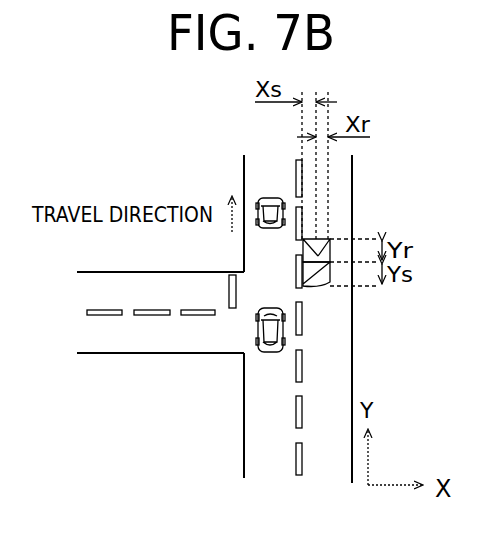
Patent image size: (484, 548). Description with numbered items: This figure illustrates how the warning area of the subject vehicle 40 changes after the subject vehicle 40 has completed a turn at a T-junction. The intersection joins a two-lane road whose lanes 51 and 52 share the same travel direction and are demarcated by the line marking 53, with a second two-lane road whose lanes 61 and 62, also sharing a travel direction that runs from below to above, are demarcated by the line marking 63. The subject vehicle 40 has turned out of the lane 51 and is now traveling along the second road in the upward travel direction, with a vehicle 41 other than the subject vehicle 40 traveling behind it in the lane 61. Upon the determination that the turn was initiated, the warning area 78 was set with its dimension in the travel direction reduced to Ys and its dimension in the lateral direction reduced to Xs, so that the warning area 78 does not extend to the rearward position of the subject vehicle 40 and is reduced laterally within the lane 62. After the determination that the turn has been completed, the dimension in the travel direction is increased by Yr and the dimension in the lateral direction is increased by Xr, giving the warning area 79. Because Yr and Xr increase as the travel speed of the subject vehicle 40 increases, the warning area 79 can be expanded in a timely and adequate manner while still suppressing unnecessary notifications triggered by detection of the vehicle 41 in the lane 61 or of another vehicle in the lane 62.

The subject vehicle 40 is at (259, 198).
The other vehicle 41 is at (267, 354).
The lane 51 is at (97, 287).
The lane 52 is at (88, 333).
The line marking 53 is at (95, 310).
The lane 61 is at (265, 478).
The lane 62 is at (337, 477).
The line marking 63 is at (302, 465).
The warning area 78 is at (306, 236).
The warning area 79 is at (322, 287).